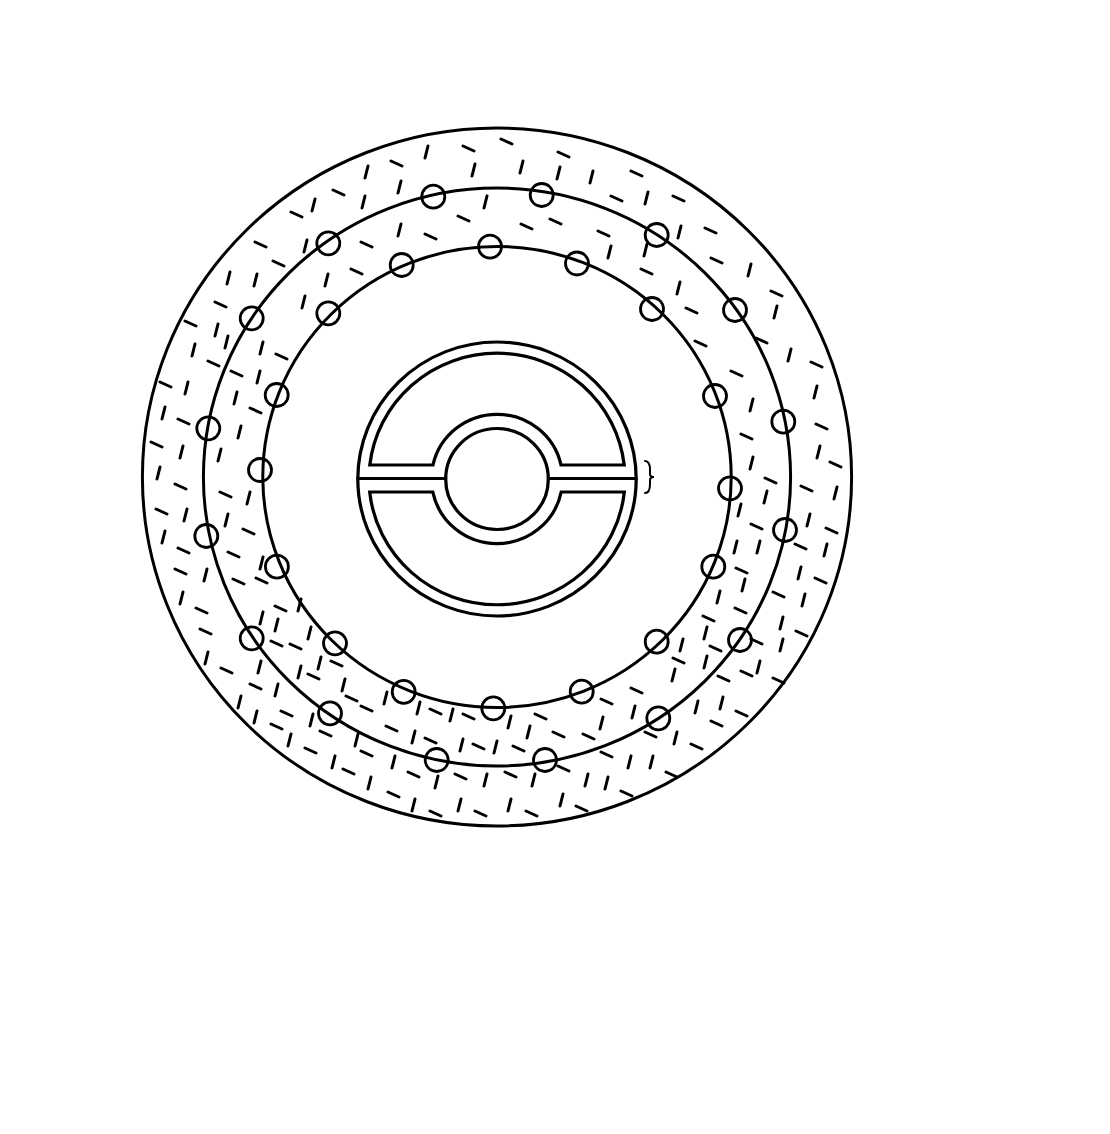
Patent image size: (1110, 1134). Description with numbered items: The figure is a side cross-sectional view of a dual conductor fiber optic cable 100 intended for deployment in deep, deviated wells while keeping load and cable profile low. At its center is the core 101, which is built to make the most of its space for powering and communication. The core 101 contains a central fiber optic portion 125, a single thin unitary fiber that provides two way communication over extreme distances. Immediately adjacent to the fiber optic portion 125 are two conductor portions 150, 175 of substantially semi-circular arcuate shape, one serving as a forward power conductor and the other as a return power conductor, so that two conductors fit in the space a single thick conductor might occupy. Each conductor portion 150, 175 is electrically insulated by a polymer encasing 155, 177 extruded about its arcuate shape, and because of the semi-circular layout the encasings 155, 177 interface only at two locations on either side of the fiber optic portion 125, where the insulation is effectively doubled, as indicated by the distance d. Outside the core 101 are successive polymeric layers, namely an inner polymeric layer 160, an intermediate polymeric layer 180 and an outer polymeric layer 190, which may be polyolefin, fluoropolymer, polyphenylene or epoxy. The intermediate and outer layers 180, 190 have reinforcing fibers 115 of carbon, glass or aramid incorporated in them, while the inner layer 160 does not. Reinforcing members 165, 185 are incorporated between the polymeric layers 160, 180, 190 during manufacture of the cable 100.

The dual conductor fiber optic cable 100 is at (512, 546).
The core 101 is at (415, 466).
The reinforcing fibers 115 is at (475, 477).
The central fiber optic portion 125 is at (536, 656).
The conductor portion 150 is at (497, 258).
The encasing 155 is at (388, 417).
The inner polymeric layer 160 is at (413, 477).
The reinforcing members 165 is at (479, 477).
The conductor portion 175 is at (459, 680).
The encasing 177 is at (562, 663).
The intermediate polymeric layer 180 is at (571, 438).
The reinforcing members 185 is at (469, 458).
The outer polymeric layer 190 is at (500, 477).